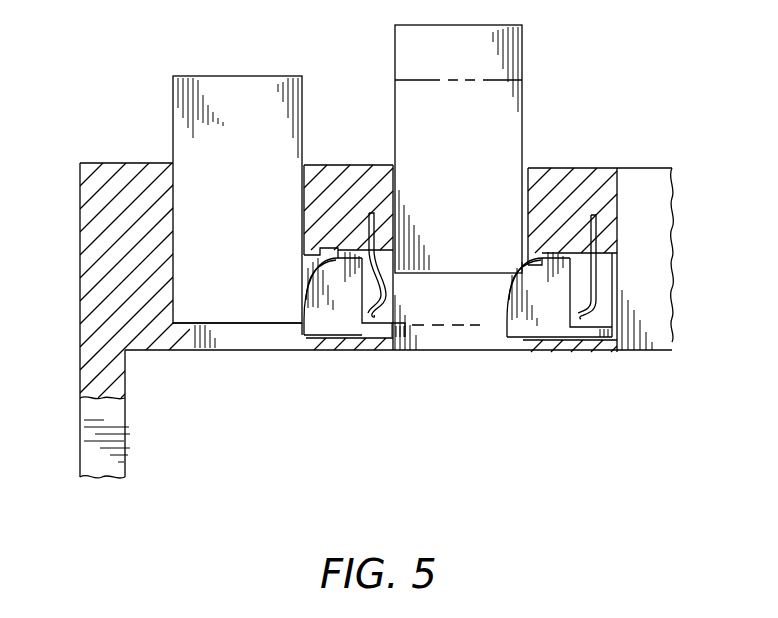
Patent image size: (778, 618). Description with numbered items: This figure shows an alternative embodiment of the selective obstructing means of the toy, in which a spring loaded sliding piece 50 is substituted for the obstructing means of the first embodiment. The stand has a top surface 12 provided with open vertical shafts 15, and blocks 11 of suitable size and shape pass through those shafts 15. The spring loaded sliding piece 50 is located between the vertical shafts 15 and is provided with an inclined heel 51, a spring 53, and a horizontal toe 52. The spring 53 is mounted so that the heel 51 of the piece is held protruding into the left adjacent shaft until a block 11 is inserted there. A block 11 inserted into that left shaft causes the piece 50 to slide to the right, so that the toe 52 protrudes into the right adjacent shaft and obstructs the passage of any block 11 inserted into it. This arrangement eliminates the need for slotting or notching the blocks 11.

The blocks 11 is at (173, 102).
The top surface 12 is at (80, 200).
The open shafts 15 is at (243, 342).
The spring loaded sliding piece 50 is at (330, 350).
The inclined heel 51 is at (306, 276).
The horizontal toe 52 is at (400, 345).
The spring 53 is at (387, 289).